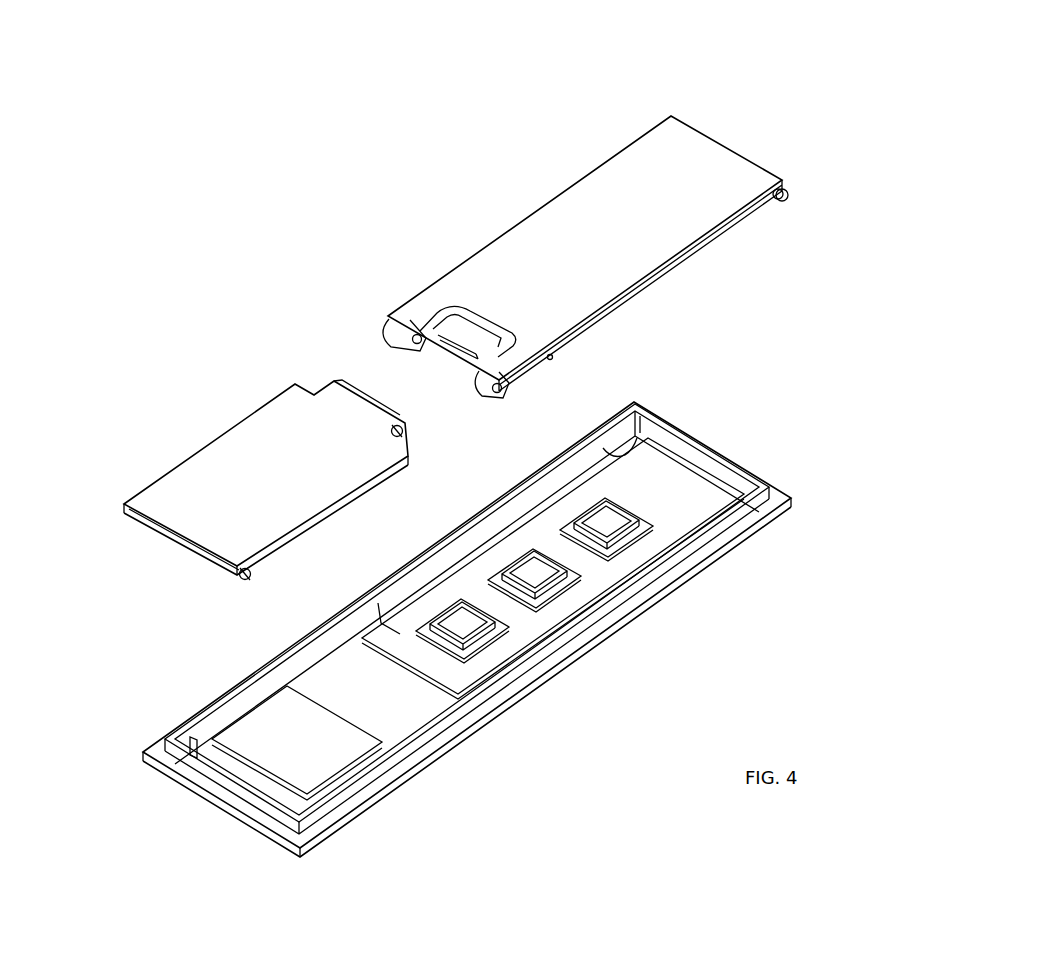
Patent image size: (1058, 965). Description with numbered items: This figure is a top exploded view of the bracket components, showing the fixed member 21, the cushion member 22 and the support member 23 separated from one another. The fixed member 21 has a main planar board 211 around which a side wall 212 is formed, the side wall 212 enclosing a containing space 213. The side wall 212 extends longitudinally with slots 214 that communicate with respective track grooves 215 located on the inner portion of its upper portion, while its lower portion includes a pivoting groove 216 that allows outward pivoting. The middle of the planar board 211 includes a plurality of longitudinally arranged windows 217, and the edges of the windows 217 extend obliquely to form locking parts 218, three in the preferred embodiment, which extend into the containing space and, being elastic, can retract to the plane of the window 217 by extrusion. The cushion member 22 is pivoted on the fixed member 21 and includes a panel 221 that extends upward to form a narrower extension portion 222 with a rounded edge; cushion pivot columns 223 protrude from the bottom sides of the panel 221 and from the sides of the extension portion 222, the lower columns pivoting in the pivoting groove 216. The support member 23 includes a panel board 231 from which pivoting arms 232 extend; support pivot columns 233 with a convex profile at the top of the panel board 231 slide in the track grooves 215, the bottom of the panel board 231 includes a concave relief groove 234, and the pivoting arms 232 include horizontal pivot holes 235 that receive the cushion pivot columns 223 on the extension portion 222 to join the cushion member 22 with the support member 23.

The fixed member 21 is at (495, 747).
The planar board 211 is at (722, 535).
The side wall 212 is at (660, 563).
The containing space 213 is at (658, 475).
The slot 214 is at (478, 557).
The track groove 215 is at (641, 416).
The pivoting groove 216 is at (187, 752).
The window 217 is at (545, 577).
The locking part 218 is at (552, 595).
The cushion member 22 is at (192, 410).
The panel 221 is at (207, 512).
The extension portion 222 is at (360, 410).
The cushion pivot column 223 is at (245, 582).
The support member 23 is at (545, 155).
The panel board 231 is at (645, 220).
The pivoting arm 232 is at (413, 313).
The support pivot column 233 is at (789, 198).
The relief groove 234 is at (472, 323).
The pivot hole 235 is at (385, 315).